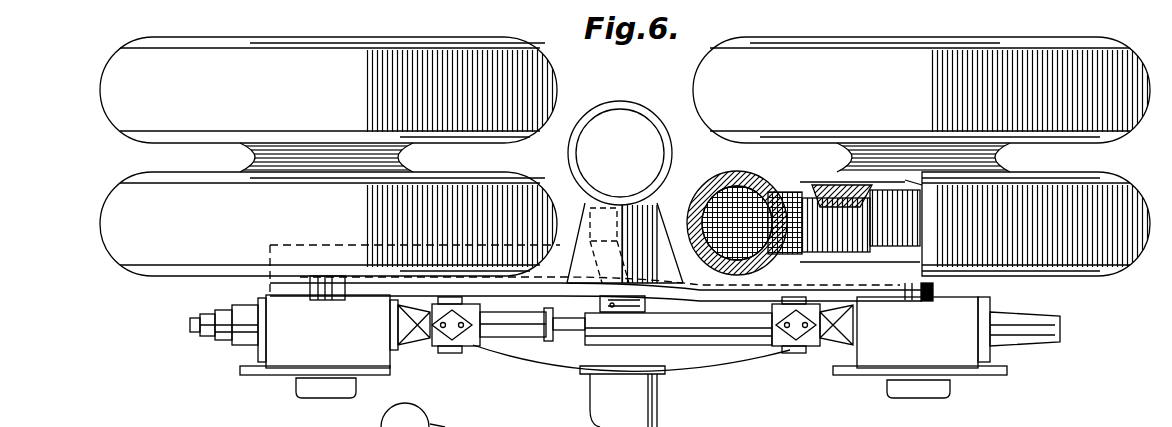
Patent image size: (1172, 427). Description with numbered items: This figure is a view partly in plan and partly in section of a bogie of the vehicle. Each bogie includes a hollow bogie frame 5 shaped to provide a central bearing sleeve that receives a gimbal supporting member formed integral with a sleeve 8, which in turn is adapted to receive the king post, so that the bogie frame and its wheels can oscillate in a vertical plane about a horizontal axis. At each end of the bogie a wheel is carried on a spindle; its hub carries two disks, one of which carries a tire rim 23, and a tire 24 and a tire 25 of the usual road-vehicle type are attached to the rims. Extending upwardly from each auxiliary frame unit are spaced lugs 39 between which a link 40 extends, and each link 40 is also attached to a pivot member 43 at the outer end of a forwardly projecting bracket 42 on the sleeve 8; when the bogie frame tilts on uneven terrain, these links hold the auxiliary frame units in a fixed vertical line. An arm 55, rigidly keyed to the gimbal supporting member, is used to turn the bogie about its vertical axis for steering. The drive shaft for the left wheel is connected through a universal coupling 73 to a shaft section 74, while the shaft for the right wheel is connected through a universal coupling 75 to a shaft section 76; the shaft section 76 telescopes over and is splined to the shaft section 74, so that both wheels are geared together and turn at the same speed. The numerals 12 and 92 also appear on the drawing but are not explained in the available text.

The bogie frame 5 is at (566, 360).
The sleeve 8 is at (631, 118).
The drive shaft 12 is at (405, 426).
The tire rim 23 is at (806, 165).
The tire 24 is at (113, 78).
The tire 25 is at (110, 211).
The lugs 39 is at (333, 292).
The link 40 is at (352, 297).
The bracket 42 is at (601, 220).
The pivot member 43 is at (600, 300).
The arm 55 is at (657, 387).
The universal coupling 73 is at (448, 354).
The shaft section 74 is at (518, 340).
The universal coupling 75 is at (795, 355).
The shaft section 76 is at (678, 334).
The coupling 92 is at (445, 426).